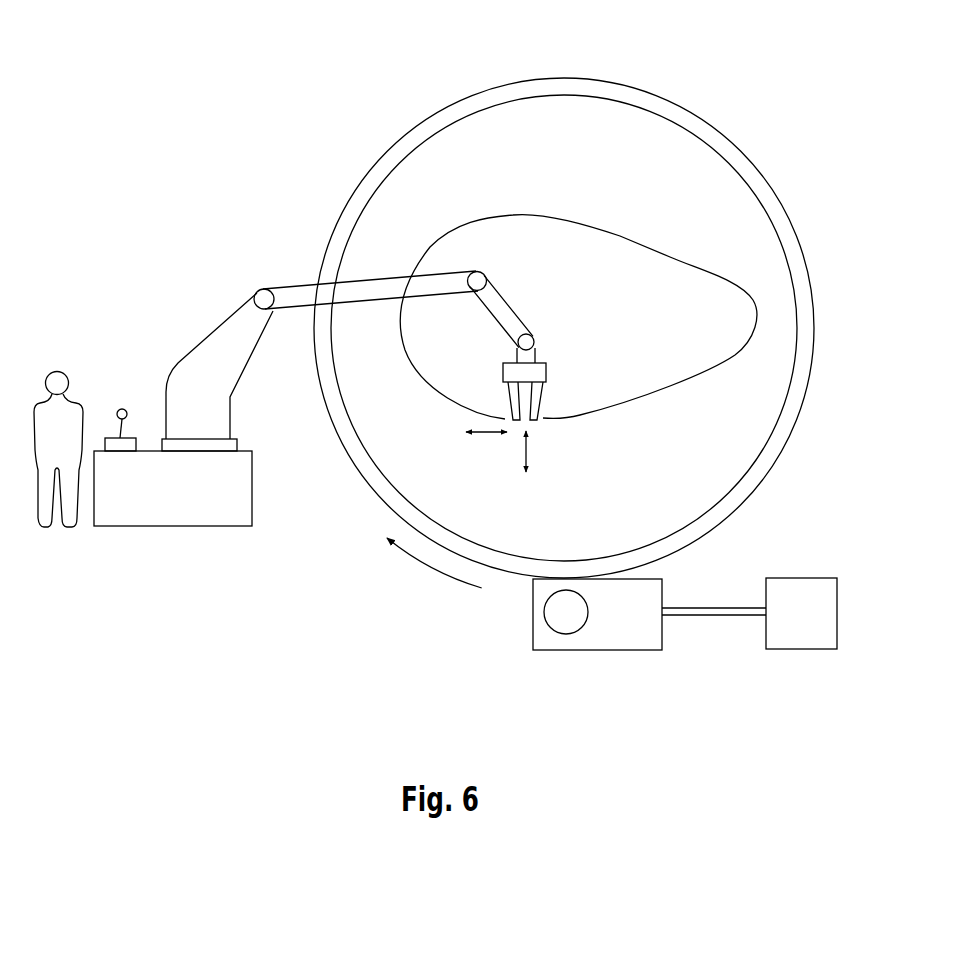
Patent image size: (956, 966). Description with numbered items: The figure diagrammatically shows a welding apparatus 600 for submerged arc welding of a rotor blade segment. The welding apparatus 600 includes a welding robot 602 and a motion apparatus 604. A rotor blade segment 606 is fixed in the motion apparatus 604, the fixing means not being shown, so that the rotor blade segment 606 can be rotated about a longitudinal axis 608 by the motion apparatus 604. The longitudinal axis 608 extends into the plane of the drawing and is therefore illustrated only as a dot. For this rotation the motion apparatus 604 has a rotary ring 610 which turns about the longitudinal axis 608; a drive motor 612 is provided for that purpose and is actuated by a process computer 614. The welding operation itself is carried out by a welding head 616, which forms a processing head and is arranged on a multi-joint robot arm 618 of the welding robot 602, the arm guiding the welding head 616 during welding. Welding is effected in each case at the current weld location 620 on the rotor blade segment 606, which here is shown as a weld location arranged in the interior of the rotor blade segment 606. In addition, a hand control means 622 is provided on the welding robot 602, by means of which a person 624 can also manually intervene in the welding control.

The welding apparatus 600 is at (334, 128).
The welding robot 602 is at (197, 290).
The motion apparatus 604 is at (752, 526).
The rotor blade segment 606 is at (670, 257).
The longitudinal axis 608 is at (568, 290).
The rotary ring 610 is at (800, 297).
The drive motor 612 is at (600, 650).
The process computer 614 is at (825, 640).
The welding head 616 is at (546, 372).
The multi-joint robot arm 618 is at (302, 295).
The current weld location 620 is at (550, 432).
The hand control means 622 is at (126, 389).
The person 624 is at (58, 361).